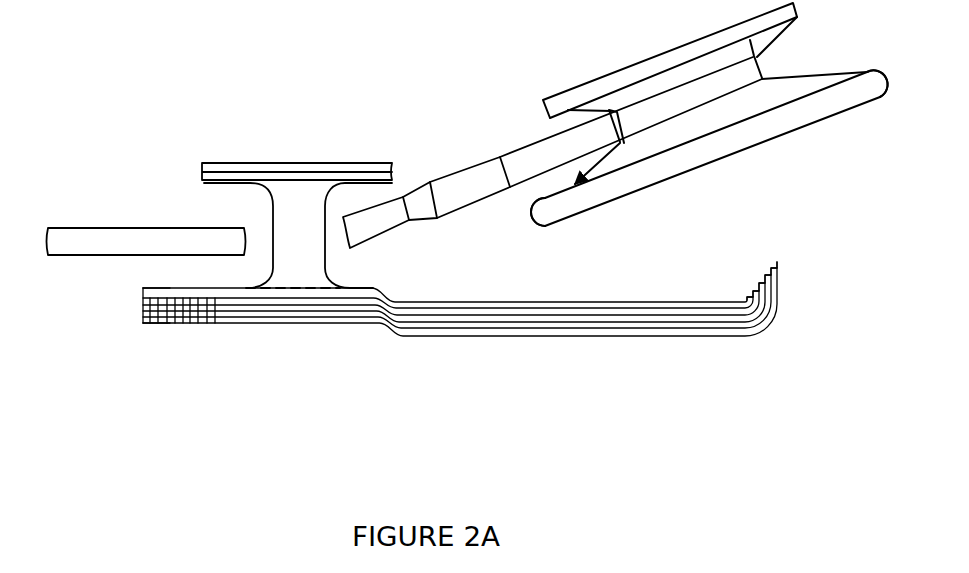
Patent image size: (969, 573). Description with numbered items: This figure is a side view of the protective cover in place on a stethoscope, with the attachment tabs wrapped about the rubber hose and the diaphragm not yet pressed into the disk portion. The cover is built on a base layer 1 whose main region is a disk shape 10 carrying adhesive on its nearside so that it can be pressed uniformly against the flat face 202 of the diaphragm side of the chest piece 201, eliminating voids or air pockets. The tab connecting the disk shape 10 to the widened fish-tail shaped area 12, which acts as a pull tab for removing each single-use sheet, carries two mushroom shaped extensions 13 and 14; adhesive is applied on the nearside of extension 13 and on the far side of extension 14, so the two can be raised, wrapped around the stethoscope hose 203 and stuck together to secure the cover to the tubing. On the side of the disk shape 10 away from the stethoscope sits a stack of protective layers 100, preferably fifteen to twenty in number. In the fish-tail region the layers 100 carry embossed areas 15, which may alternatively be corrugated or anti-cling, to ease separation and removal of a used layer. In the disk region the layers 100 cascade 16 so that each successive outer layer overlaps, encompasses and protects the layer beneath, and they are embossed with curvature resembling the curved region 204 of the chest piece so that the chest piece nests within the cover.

The base layer 1 is at (614, 302).
The disk shape 10 is at (710, 300).
The fish-tail shaped area 12 is at (168, 286).
The mushroom shaped extension 13 is at (228, 163).
The mushroom shaped extension 14 is at (214, 187).
The embossed areas 15 is at (155, 326).
The cascade 16 is at (761, 272).
The protective layers 100 is at (481, 338).
The chest piece 201 is at (768, 64).
The flat face 202 is at (692, 176).
The stethoscope hose 203 is at (84, 259).
The curved region 204 is at (529, 229).